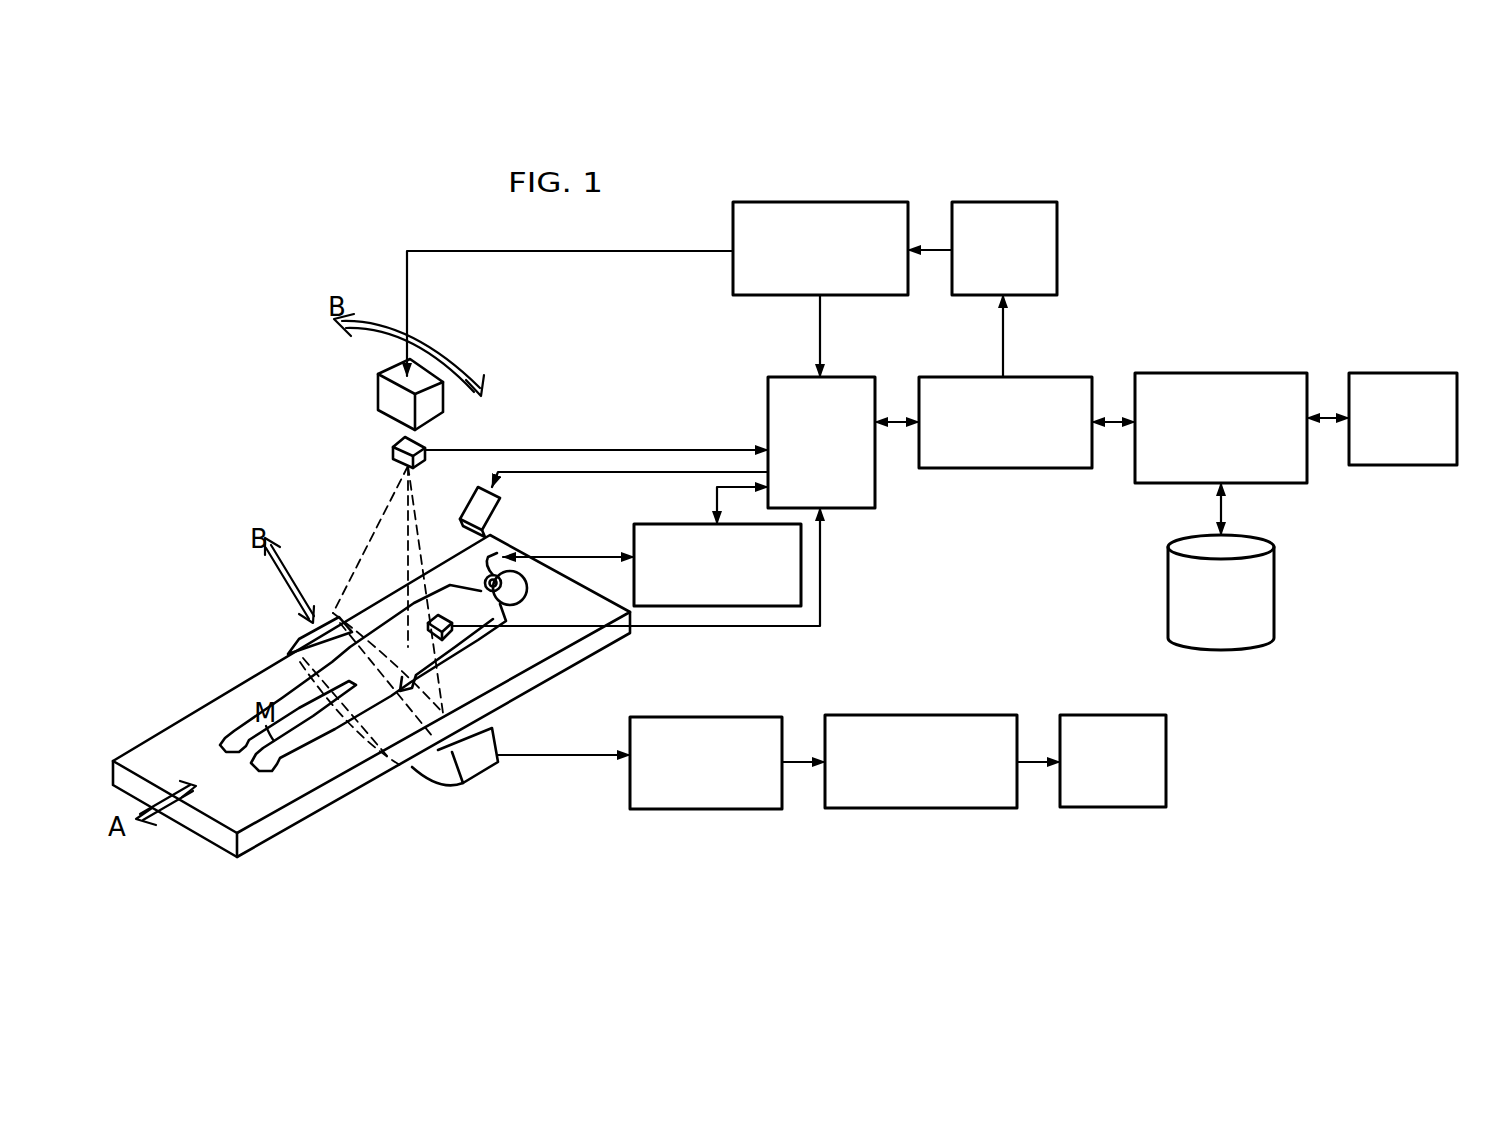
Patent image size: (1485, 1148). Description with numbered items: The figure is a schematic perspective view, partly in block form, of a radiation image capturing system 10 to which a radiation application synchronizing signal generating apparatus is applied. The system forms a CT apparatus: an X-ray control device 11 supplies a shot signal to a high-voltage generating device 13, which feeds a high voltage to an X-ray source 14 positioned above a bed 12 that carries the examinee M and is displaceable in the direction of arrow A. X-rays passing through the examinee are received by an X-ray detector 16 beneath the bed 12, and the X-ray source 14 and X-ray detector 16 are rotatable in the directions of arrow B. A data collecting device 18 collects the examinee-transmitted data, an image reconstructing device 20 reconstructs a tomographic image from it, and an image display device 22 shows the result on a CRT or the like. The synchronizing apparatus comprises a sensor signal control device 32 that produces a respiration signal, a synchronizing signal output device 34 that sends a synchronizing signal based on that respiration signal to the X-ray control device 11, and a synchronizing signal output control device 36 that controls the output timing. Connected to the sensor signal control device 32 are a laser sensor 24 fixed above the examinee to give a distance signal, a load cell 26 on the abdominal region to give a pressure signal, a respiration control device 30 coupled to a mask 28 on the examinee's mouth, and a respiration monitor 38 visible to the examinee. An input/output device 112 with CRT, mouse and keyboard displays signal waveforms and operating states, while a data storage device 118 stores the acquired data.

The radiation image capturing system 10 is at (1130, 188).
The X-ray control device 11 is at (1043, 202).
The bed 12 is at (560, 664).
The high-voltage generating device 13 is at (895, 202).
The X-ray source 14 is at (393, 395).
The X-ray detector 16 is at (437, 765).
The data collecting device 18 is at (768, 717).
The image reconstructing device 20 is at (1003, 715).
The image display device 22 is at (1151, 715).
The laser sensor 24 is at (394, 452).
The load cell 26 is at (449, 612).
The mask 28 is at (516, 592).
The respiration control device 30 is at (661, 523).
The sensor signal control device 32 is at (860, 377).
The synchronizing signal output device 34 is at (1065, 377).
The synchronizing signal output control device 36 is at (1251, 373).
The respiration monitor 38 is at (476, 496).
The input/output device 112 is at (1442, 373).
The data storage device 118 is at (1276, 567).